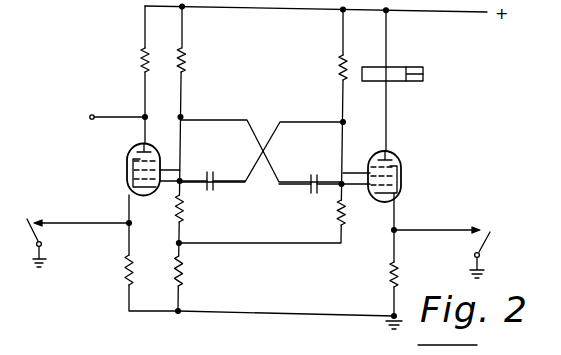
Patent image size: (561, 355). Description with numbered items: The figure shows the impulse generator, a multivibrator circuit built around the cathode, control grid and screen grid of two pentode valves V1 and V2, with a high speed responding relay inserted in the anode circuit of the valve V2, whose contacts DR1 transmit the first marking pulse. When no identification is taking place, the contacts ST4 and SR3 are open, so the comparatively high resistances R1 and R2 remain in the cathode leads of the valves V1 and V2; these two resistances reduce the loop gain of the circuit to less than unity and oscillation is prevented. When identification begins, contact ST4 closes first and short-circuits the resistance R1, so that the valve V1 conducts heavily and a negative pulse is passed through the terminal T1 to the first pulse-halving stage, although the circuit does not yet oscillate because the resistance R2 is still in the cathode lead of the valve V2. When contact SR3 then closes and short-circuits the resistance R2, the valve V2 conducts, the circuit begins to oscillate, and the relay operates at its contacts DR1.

The terminal T1 is at (115, 108).
The pentode valve V1 is at (134, 165).
The pentode valve V2 is at (393, 172).
The relay contacts DR1 is at (449, 76).
The contact ST4 is at (74, 236).
The contact SR3 is at (444, 246).
The resistance R1 is at (115, 270).
The resistance R2 is at (405, 254).